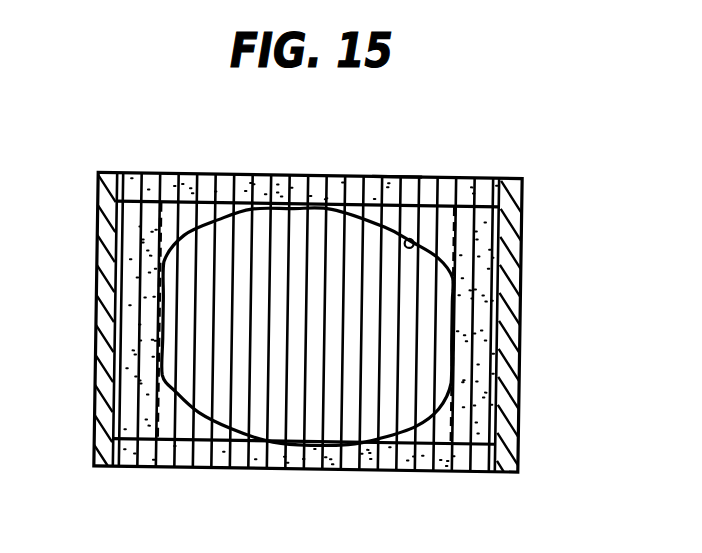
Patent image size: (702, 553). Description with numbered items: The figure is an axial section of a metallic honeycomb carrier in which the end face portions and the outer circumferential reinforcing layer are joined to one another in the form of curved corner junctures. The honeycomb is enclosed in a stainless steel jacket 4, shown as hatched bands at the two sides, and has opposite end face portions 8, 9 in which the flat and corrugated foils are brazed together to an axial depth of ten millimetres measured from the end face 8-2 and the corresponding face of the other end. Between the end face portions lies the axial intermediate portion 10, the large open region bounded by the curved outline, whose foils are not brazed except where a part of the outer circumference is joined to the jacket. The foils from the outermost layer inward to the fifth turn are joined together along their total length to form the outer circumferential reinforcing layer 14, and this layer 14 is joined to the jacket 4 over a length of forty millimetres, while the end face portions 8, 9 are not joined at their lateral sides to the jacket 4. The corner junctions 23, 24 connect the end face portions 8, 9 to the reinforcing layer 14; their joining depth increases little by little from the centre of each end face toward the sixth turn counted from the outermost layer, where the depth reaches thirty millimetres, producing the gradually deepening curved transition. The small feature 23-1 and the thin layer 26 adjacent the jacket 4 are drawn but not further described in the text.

The jacket 4 is at (107, 193).
The end face portion 8 is at (320, 177).
The end face 8-2 is at (393, 175).
The end face portion 9 is at (323, 468).
The axial intermediate portion 10 is at (311, 337).
The outer circumferential reinforcing layer 14 is at (135, 344).
The corner junction 23 is at (170, 222).
The boundary feature 23-1 is at (412, 238).
The corner junction 24 is at (170, 421).
The thin intermediate layer 26 is at (112, 311).